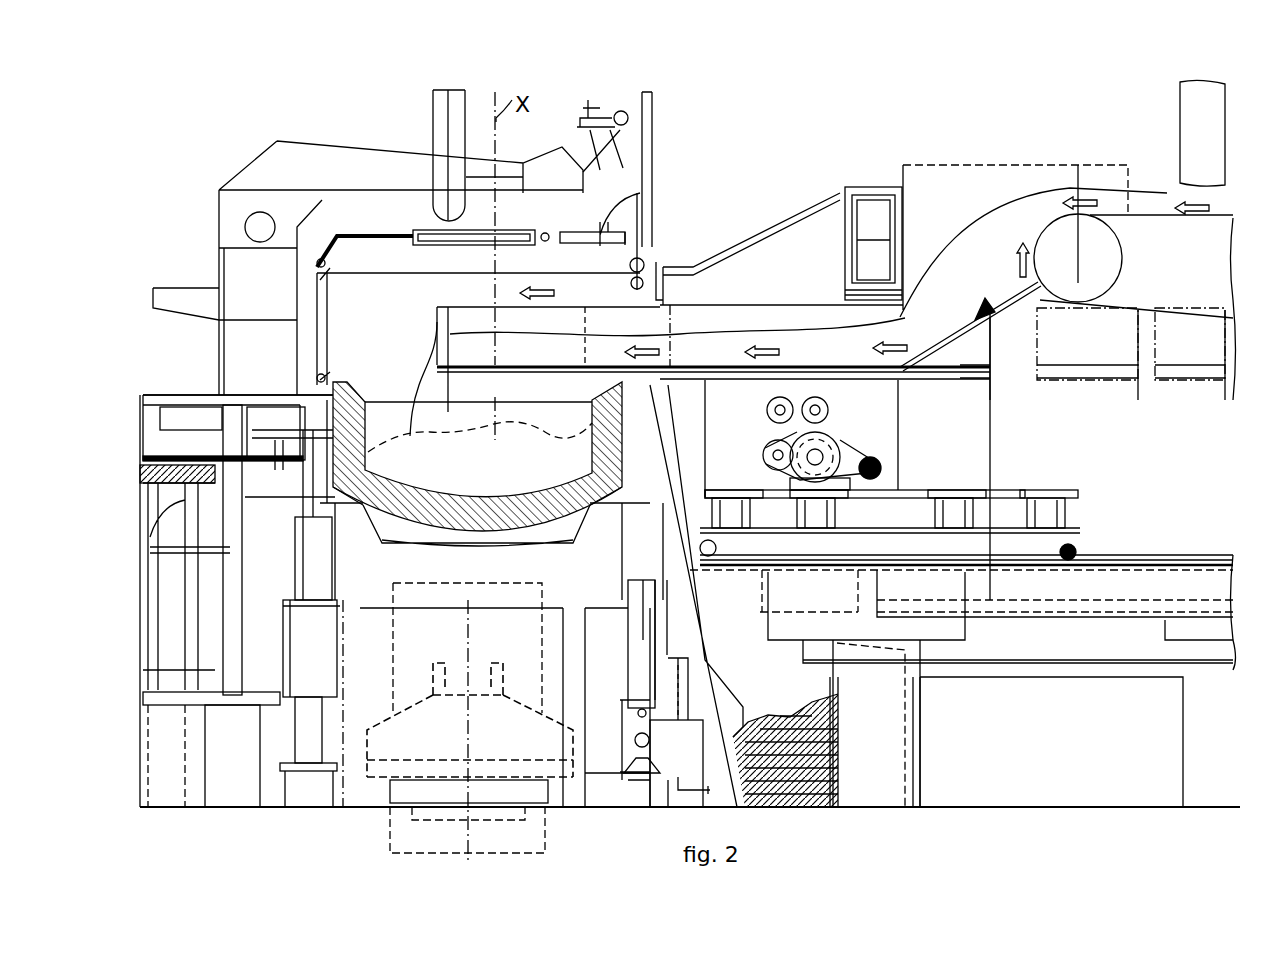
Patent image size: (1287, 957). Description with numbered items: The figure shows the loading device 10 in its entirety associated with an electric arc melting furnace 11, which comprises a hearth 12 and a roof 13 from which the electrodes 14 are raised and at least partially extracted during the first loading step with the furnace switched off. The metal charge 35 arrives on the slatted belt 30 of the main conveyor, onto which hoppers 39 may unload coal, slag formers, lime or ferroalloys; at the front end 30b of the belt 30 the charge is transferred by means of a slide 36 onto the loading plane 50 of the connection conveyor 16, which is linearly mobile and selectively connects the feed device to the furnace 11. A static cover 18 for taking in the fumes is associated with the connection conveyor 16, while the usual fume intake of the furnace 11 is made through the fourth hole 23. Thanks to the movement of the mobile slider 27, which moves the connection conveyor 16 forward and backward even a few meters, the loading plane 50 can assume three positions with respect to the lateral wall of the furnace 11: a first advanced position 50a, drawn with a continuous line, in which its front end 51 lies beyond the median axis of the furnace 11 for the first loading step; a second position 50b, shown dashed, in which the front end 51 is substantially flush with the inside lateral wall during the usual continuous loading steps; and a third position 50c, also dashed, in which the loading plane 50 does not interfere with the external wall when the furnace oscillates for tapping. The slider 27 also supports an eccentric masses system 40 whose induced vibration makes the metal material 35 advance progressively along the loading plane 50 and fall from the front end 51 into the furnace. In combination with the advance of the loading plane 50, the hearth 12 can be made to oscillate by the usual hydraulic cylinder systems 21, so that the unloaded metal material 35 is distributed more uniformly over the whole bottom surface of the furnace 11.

The feed device 10 is at (878, 145).
The electric arc melting furnace 11 is at (280, 366).
The hearth 12 is at (428, 510).
The roof 13 is at (322, 200).
The electrodes 14 is at (440, 122).
The connection conveyor 16 is at (677, 242).
The static cover 18 is at (825, 215).
The hydraulic cylinder systems 21 is at (313, 717).
The fourth hole 23 is at (625, 222).
The mobile slider 27 is at (965, 545).
The slatted belt 30 is at (1160, 235).
The front end of the belt 30b is at (1115, 215).
The metal charge 35 is at (722, 345).
The slide 36 is at (995, 314).
The hoppers 39 is at (1208, 135).
The eccentric masses system 40 is at (882, 433).
The loading plane 50 is at (752, 370).
The first advanced position 50a is at (422, 305).
The second position 50b is at (575, 322).
The third position 50c is at (650, 331).
The front end 51 is at (437, 325).